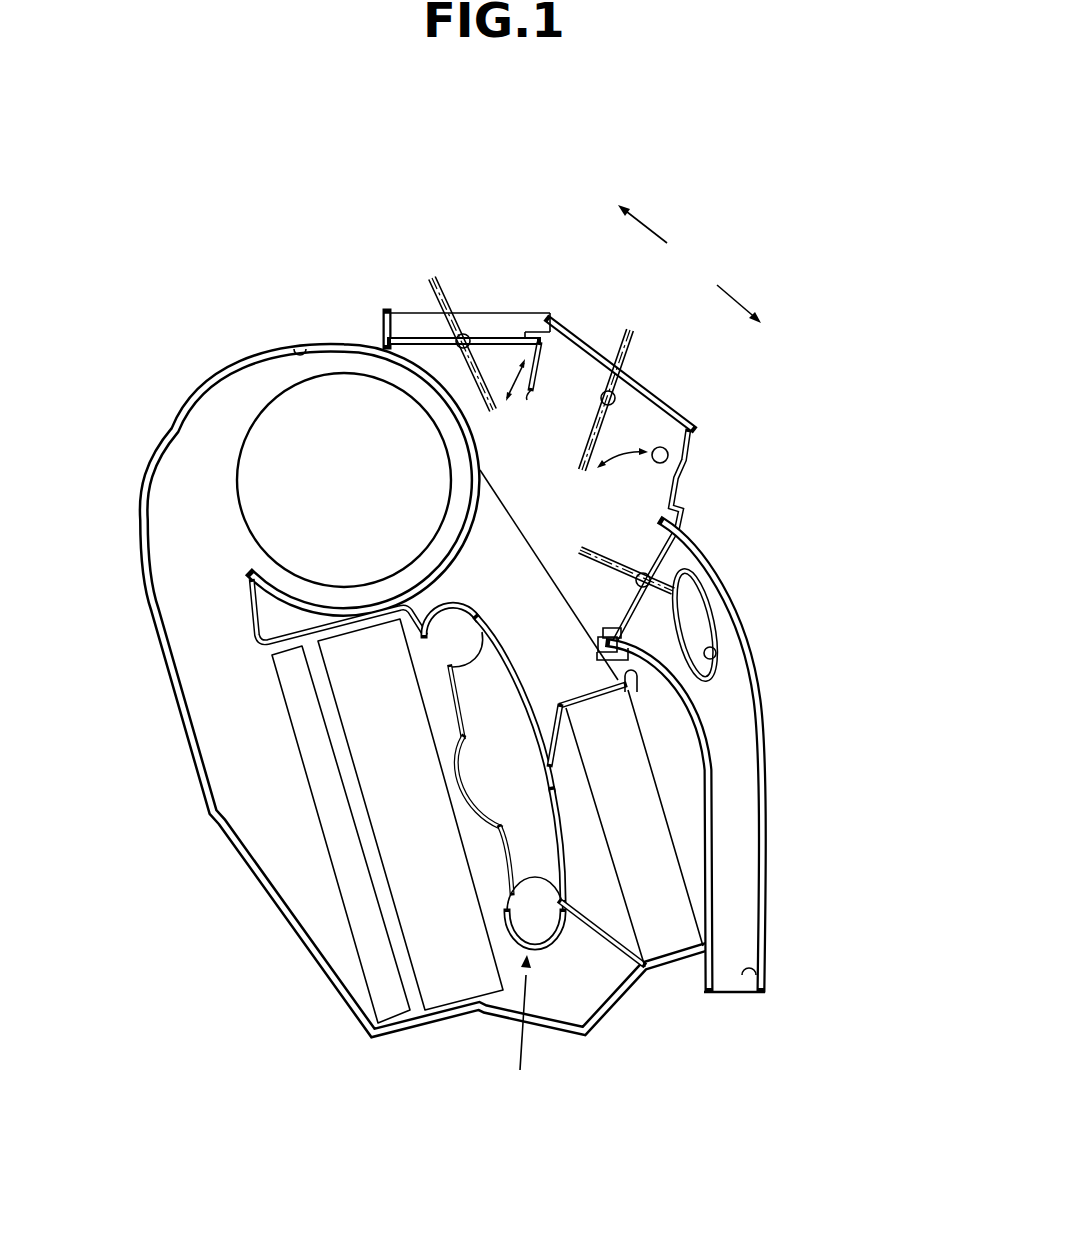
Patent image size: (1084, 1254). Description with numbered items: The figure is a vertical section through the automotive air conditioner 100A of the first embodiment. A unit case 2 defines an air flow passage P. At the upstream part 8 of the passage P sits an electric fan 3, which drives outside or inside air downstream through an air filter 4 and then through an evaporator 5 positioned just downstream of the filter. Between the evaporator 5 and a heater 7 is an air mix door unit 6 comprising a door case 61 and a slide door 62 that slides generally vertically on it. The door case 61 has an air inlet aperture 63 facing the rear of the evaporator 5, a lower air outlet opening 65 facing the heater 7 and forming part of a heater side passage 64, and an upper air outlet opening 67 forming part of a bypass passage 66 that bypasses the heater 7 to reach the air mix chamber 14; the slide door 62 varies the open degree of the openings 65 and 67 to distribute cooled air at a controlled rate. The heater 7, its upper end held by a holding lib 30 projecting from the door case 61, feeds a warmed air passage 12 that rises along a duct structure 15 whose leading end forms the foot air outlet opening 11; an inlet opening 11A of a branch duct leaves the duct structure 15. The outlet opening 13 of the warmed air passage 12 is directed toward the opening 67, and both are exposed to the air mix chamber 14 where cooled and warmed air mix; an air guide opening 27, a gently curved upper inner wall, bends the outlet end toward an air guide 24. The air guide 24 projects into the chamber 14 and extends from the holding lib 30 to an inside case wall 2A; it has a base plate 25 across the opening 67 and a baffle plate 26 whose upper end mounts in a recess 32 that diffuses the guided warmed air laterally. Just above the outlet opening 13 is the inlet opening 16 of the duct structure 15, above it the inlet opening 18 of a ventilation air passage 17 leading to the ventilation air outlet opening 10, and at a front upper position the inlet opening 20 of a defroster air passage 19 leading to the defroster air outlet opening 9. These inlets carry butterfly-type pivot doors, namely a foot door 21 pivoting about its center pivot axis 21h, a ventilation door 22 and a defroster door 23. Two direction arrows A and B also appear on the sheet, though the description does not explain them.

The automotive air conditioner 100A is at (705, 160).
The unit case 2 is at (192, 390).
The inside case wall 2A is at (493, 627).
The electric fan 3 is at (262, 405).
The air filter 4 is at (368, 940).
The evaporator 5 is at (457, 986).
The air mix door unit 6 is at (518, 1031).
The heater 7 is at (670, 934).
The upstream part 8 is at (300, 346).
The defroster air outlet opening 9 is at (487, 312).
The ventilation air outlet opening 10 is at (658, 393).
The foot air outlet opening 11 is at (745, 980).
The inlet opening of a branch duct 11A is at (716, 668).
The warmed air passage 12 is at (683, 800).
The outlet opening 13 is at (631, 694).
The air mix chamber 14 is at (603, 598).
The duct structure 15 is at (762, 737).
The inlet opening 16 is at (612, 618).
The ventilation air passage 17 is at (592, 360).
The inlet opening 18 is at (670, 456).
The defroster air passage 19 is at (510, 322).
The inlet opening 20 is at (525, 392).
The foot door 21 is at (655, 548).
The center pivot axis 21h is at (660, 568).
The ventilation door 22 is at (575, 345).
The defroster door 23 is at (420, 336).
The air guide 24 is at (588, 483).
The base plate 25 is at (495, 625).
The baffle plate 26 is at (502, 605).
The air guide opening 27 is at (603, 655).
The holding lib 30 is at (680, 627).
The recess 32 is at (410, 600).
The door case 61 is at (550, 948).
The slide door 62 is at (530, 737).
The air inlet aperture 63 is at (456, 790).
The heater side passage 64 is at (530, 840).
The lower air outlet opening 65 is at (511, 893).
The bypass passage 66 is at (462, 704).
The upper air outlet opening 67 is at (483, 700).
The air flow passage P is at (257, 805).
The direction A is at (645, 218).
The direction B is at (739, 294).